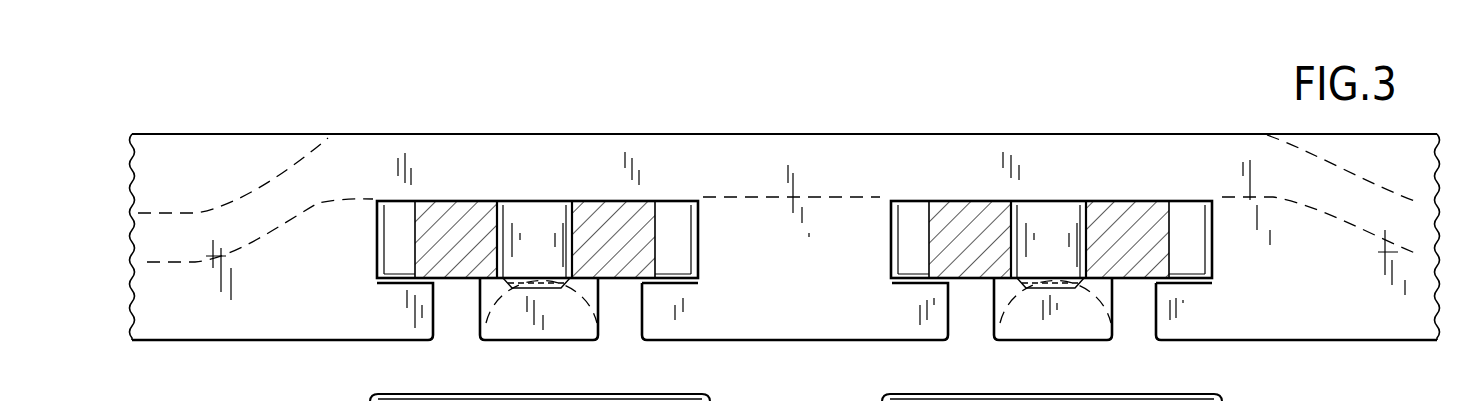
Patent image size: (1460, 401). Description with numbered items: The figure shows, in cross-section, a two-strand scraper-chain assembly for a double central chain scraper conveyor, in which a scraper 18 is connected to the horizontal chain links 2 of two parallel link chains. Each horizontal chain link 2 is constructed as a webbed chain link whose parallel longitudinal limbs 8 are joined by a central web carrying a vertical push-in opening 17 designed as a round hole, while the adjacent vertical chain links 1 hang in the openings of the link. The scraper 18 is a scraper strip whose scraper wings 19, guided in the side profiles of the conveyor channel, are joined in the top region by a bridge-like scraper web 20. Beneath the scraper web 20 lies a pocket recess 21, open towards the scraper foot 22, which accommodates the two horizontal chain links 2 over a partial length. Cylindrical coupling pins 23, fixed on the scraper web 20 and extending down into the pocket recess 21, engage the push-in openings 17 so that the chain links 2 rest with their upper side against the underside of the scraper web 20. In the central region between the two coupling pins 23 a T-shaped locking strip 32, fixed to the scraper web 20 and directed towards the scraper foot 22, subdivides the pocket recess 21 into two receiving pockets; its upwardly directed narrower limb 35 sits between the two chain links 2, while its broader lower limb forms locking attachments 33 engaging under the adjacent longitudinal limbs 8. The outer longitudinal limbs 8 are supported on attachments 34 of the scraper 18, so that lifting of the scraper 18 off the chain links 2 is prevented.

The vertical chain link 1 is at (532, 325).
The horizontal chain link 2 is at (453, 235).
The longitudinal limb 8 is at (393, 248).
The push-in opening 17 is at (578, 217).
The scraper 18 is at (277, 318).
The scraper wing 19 is at (170, 200).
The scraper web 20 is at (707, 162).
The pocket recess 21 is at (455, 330).
The scraper foot 22 is at (193, 345).
The coupling pin 23 is at (538, 212).
The locking strip 32 is at (798, 298).
The locking attachment 33 is at (663, 323).
The attachment 34 is at (403, 320).
The upwardly directed narrower limb 35 is at (826, 230).